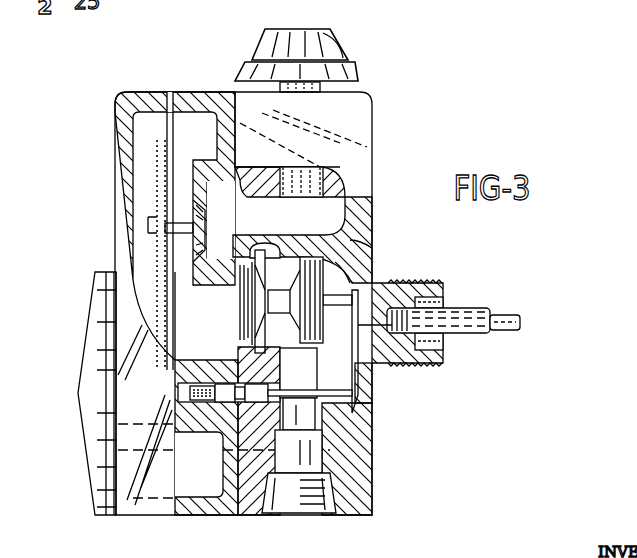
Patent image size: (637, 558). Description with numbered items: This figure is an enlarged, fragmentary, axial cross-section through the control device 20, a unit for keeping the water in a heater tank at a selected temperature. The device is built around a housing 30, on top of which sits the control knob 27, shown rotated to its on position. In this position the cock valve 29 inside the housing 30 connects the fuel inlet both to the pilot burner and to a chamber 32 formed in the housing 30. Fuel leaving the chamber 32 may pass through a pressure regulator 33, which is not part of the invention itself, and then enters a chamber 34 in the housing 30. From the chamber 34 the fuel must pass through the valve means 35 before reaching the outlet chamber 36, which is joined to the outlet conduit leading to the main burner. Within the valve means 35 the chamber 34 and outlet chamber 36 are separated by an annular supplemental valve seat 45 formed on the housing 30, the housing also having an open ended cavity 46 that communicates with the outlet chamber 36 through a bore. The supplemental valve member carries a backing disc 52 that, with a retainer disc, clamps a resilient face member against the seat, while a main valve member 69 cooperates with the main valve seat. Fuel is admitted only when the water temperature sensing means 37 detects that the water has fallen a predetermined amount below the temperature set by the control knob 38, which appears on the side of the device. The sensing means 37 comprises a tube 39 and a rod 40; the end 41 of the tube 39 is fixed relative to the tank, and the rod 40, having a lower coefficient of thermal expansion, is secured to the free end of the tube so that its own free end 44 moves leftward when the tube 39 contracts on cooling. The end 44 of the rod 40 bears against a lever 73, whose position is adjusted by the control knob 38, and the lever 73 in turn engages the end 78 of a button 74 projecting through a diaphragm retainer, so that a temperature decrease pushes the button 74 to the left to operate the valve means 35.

The control device 20 is at (387, 82).
The control knob 27 is at (305, 32).
The housing 30 is at (374, 130).
The cock valve 29 is at (345, 195).
The chamber 32 is at (355, 225).
The button 74 is at (372, 247).
The end of button 78 is at (352, 280).
The free end of rod 44 is at (405, 290).
The end of tube 41 is at (440, 300).
The water temperature sensing means 37 is at (468, 303).
The tube 39 is at (465, 335).
The rod 40 is at (497, 333).
The lever 73 is at (352, 338).
The supplemental valve seat 45 is at (262, 250).
The open ended cavity 46 is at (290, 252).
The pressure regulator 33 is at (193, 210).
The backing disc 52 is at (230, 258).
The control knob 38 is at (87, 418).
The valve means 35 is at (278, 338).
The main valve member 69 is at (178, 378).
The outlet chamber 36 is at (318, 420).
The chamber 34 is at (163, 372).